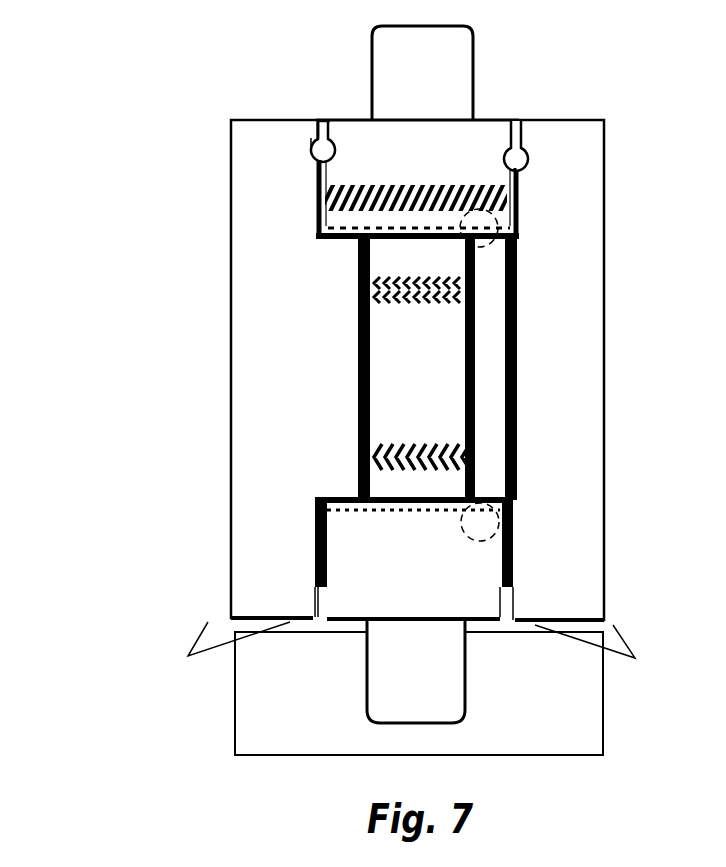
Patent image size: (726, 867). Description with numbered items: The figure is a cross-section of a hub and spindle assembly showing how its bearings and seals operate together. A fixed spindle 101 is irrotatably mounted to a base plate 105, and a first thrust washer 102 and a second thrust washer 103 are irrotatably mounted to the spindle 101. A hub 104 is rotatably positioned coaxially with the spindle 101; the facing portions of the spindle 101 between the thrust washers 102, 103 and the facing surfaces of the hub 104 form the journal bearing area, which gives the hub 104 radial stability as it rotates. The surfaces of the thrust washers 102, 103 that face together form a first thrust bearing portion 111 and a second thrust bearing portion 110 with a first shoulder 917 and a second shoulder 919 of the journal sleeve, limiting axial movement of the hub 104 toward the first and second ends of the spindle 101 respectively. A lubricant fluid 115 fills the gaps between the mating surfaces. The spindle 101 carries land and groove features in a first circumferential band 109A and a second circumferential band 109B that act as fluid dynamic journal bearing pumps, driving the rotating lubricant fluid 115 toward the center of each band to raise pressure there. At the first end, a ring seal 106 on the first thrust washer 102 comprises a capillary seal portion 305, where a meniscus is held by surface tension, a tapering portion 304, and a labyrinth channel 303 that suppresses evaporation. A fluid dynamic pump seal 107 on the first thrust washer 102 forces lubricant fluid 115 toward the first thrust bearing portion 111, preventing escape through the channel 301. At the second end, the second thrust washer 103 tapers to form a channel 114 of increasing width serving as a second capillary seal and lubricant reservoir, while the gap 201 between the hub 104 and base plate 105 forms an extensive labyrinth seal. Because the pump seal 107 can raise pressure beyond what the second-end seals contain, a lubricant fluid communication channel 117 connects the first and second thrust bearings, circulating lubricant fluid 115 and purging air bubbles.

The fixed spindle 101 is at (443, 85).
The first thrust washer 102 is at (430, 174).
The second thrust washer 103 is at (433, 589).
The hub 104 is at (306, 387).
The base plate 105 is at (539, 737).
The ring seal 106 is at (316, 146).
The fluid dynamic pump seal 107 is at (305, 193).
The first circumferential band 109A is at (347, 273).
The second circumferential band 109B is at (340, 441).
The second thrust bearing portion 110 is at (323, 493).
The first thrust bearing portion 111 is at (463, 243).
The channel 114 is at (307, 507).
The lubricant fluid 115 is at (358, 410).
The lubricant fluid communication channel 117 is at (517, 320).
The gap 201 is at (418, 657).
The channel 301 is at (316, 118).
The labyrinth channel 303 is at (317, 123).
The tapering portion 304 is at (307, 137).
The capillary seal portion 305 is at (293, 163).
The first shoulder 917 is at (493, 218).
The second shoulder 919 is at (513, 525).